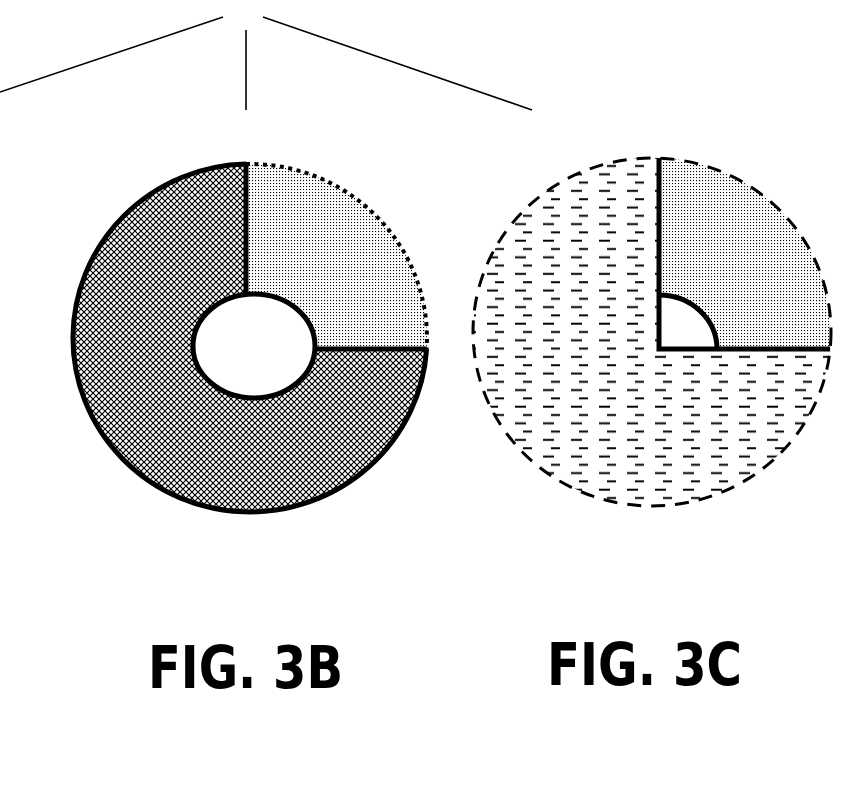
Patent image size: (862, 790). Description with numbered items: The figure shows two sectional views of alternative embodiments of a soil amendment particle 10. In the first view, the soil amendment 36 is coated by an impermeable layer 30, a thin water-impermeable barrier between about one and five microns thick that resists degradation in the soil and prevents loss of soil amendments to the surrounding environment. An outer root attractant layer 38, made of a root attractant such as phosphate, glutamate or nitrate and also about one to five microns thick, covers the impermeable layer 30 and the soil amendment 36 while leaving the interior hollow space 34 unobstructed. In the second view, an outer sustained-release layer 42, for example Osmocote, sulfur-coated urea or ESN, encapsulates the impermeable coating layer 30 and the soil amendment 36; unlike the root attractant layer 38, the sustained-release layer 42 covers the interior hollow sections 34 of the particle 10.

In FIG. 3B, the particle 10 is at (266, 55).
In FIG. 3B, the impermeable layer 30 is at (347, 195).
In FIG. 3C, the impermeable layer 30 is at (727, 173).
In FIG. 3B, the interior hollow space 34 is at (247, 355).
In FIG. 3C, the interior hollow space 34 is at (682, 328).
In FIG. 3B, the soil amendment 36 is at (343, 268).
In FIG. 3C, the soil amendment 36 is at (717, 210).
In FIG. 3B, the outer root attractant layer 38 is at (285, 462).
In FIG. 3C, the outer sustained-release layer 42 is at (592, 417).